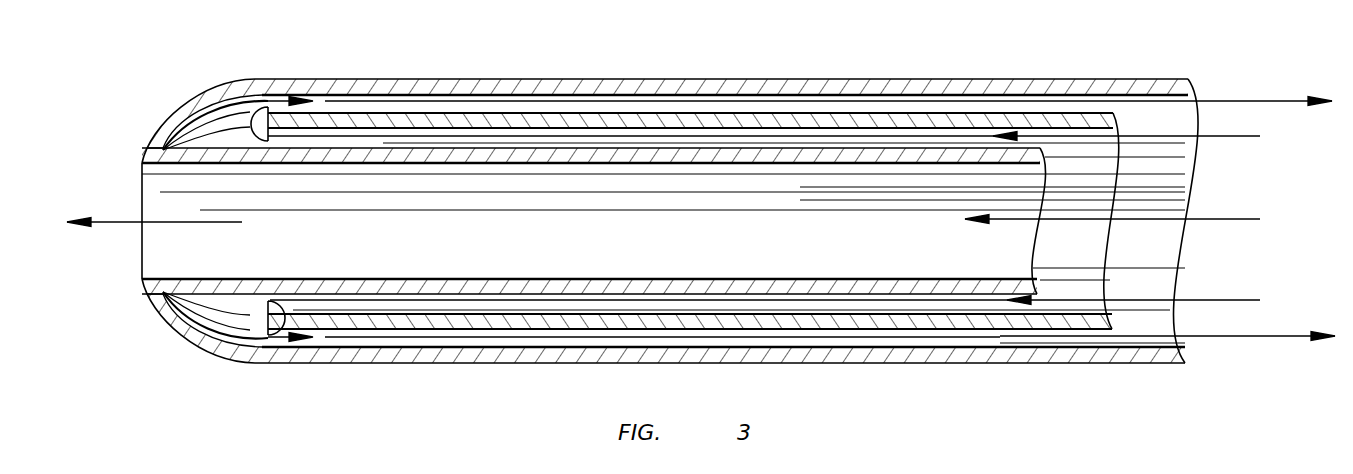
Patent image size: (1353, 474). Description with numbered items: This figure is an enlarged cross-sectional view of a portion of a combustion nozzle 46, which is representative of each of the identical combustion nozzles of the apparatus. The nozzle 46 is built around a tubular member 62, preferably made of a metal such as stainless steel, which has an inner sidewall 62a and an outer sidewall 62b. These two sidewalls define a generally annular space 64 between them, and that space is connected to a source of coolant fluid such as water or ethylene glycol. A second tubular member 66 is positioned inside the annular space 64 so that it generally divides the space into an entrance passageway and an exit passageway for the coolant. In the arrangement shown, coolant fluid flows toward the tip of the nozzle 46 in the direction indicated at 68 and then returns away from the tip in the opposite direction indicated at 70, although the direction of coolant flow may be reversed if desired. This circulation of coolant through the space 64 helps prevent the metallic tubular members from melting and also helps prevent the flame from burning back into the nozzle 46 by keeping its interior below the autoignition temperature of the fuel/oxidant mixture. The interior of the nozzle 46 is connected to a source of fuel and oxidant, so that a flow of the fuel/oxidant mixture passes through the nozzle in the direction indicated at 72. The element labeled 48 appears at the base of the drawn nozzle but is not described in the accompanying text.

The combustion nozzle 46 is at (352, 62).
The probe base connection 48 is at (141, 182).
The tubular member 62 is at (567, 78).
The inner sidewall 62a is at (513, 157).
The outer sidewall 62b is at (693, 85).
The annular space 64 is at (227, 117).
The tubular member 66 is at (760, 118).
The coolant fluid flow toward tip 68 is at (1225, 135).
The coolant fluid flow away from tip 70 is at (1265, 100).
The fuel/oxidant mixture flow 72 is at (1247, 216).